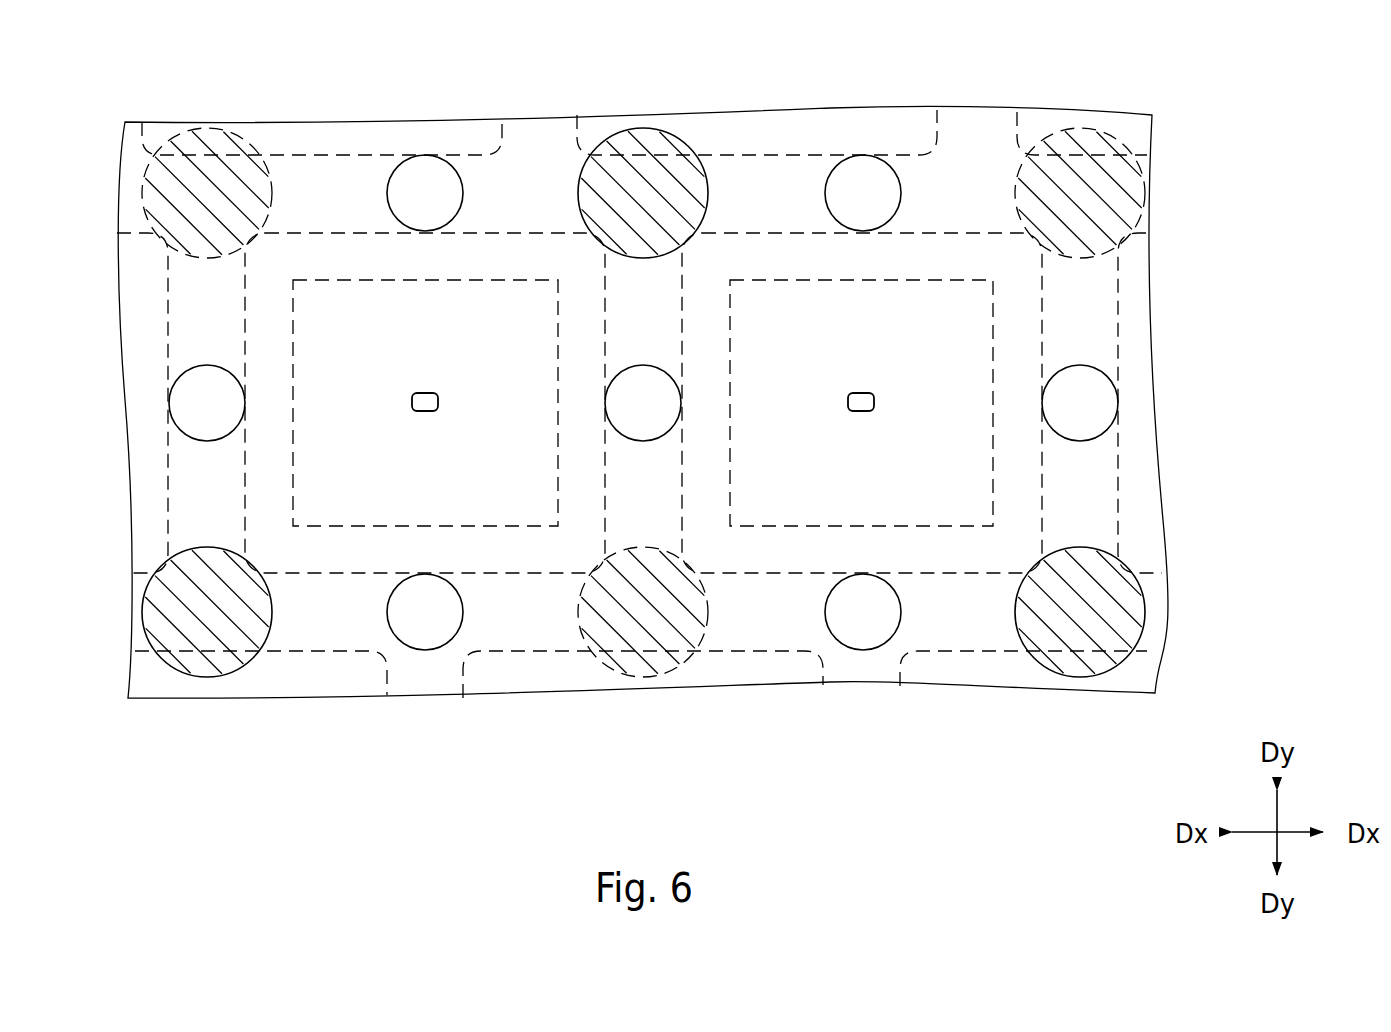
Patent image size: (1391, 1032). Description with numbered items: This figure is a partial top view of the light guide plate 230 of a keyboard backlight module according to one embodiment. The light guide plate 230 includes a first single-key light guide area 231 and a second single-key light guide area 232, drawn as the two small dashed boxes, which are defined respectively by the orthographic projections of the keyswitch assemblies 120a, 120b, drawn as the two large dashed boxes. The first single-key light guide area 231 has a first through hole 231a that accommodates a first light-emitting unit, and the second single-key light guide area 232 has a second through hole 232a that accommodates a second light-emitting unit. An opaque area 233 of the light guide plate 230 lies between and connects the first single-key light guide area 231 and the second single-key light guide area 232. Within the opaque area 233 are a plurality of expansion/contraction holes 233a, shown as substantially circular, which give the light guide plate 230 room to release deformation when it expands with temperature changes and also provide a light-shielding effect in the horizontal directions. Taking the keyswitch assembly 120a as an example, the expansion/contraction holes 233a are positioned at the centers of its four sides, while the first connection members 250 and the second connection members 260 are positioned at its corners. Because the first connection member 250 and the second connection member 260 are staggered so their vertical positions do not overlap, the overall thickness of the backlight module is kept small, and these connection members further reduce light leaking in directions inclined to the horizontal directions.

The light guide plate 230 is at (85, 52).
The first single-key light guide area 231 is at (485, 278).
The first through hole 231a is at (424, 388).
The second single-key light guide area 232 is at (922, 278).
The second through hole 232a is at (858, 388).
The opaque area 233 is at (553, 158).
The expansion/contraction holes 233a is at (646, 447).
The first connection member 250 is at (650, 128).
The second connection member 260 is at (626, 675).
The keyswitch assembly 120a is at (299, 577).
The keyswitch assembly 120b is at (955, 577).